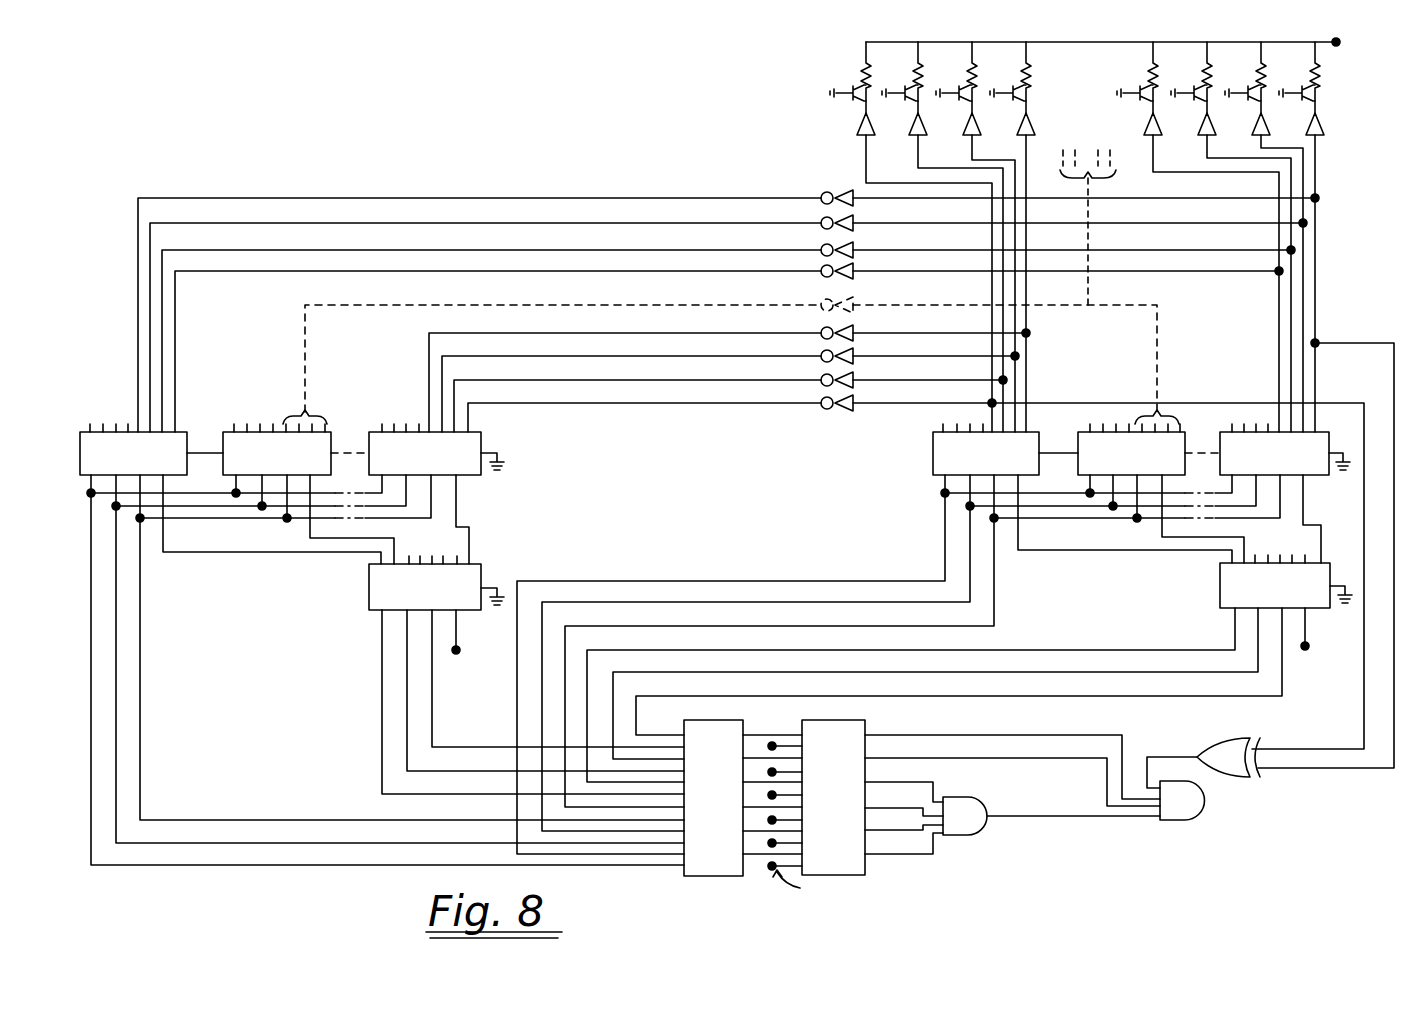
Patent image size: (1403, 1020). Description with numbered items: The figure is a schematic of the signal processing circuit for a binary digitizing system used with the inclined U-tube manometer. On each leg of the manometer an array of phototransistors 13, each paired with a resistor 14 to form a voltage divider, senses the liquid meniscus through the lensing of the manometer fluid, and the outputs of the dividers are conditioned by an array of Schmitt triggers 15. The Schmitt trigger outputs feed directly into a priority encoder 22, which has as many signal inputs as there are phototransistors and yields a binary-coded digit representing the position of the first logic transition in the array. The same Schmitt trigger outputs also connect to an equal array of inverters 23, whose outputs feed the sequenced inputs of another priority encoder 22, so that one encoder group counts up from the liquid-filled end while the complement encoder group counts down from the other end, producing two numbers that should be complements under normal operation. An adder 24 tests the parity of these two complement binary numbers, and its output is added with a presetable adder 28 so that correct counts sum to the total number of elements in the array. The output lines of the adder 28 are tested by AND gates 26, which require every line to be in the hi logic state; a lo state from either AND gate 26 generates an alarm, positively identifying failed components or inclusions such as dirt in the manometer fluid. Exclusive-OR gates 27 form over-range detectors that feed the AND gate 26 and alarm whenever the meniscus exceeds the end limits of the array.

The phototransistor 13 is at (851, 97).
The resistor 14 is at (862, 76).
The Schmitt trigger 15 is at (860, 141).
The priority encoder 22 is at (188, 431).
The inverter 23 is at (850, 276).
The adder 24 is at (684, 724).
The AND gate 26 is at (982, 838).
The exclusive-OR gate 27 is at (1235, 778).
The presetable adder 28 is at (866, 724).